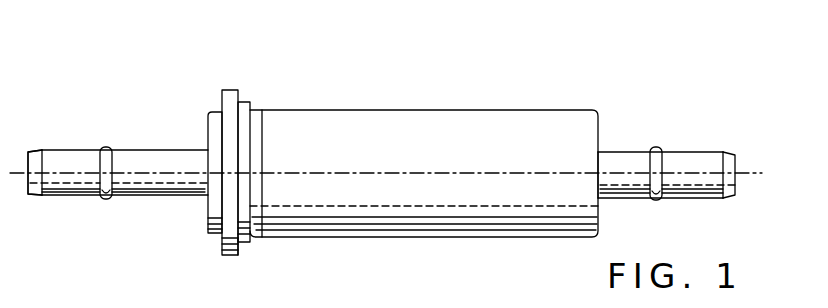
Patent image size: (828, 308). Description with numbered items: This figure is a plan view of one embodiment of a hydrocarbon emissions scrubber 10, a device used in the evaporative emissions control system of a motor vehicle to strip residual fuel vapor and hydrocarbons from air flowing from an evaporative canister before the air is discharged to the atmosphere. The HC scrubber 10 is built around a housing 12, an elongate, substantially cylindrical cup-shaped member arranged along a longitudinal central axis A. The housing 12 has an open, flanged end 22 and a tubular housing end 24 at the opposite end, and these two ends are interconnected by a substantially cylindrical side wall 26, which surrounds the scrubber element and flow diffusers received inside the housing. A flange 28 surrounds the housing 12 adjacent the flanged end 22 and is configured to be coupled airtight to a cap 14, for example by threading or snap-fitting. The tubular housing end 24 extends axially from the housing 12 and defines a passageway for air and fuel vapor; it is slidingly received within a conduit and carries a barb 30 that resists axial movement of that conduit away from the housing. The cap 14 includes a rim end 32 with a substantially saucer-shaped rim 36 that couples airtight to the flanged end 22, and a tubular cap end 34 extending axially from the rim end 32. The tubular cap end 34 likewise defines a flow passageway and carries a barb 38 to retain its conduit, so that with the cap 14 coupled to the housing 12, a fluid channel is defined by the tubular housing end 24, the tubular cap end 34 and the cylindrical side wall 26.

The hydrocarbon emissions scrubber 10 is at (596, 61).
The housing 12 is at (445, 103).
The cap 14 is at (139, 205).
The flanged end 22 is at (257, 235).
The tubular housing end 24 is at (683, 150).
The cylindrical side wall 26 is at (500, 235).
The flange 28 is at (244, 100).
The barb 30 is at (658, 200).
The rim end 32 is at (207, 132).
The tubular cap end 34 is at (57, 148).
The rim 36 is at (222, 98).
The barb 38 is at (104, 200).
The longitudinal central axis A is at (753, 170).